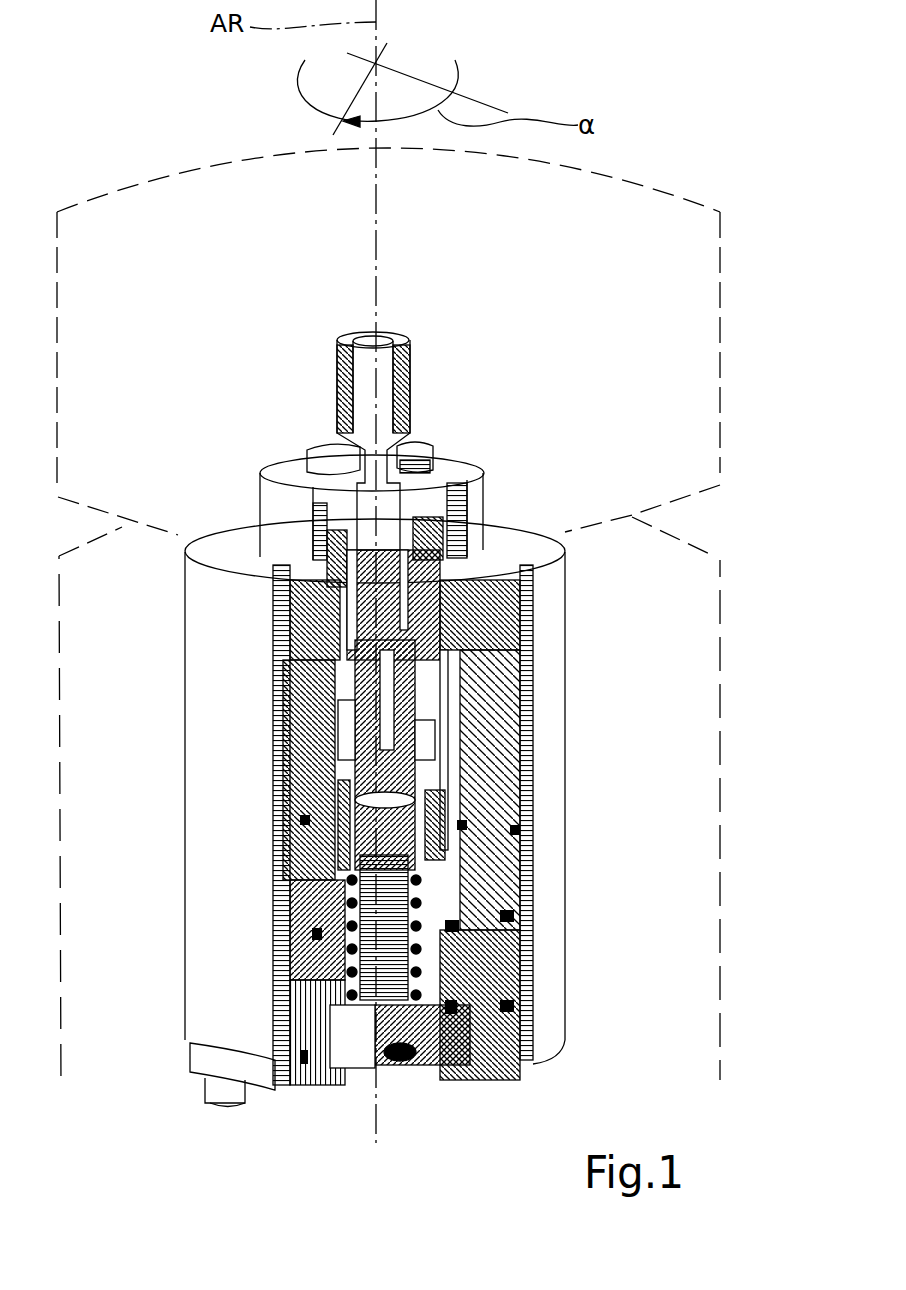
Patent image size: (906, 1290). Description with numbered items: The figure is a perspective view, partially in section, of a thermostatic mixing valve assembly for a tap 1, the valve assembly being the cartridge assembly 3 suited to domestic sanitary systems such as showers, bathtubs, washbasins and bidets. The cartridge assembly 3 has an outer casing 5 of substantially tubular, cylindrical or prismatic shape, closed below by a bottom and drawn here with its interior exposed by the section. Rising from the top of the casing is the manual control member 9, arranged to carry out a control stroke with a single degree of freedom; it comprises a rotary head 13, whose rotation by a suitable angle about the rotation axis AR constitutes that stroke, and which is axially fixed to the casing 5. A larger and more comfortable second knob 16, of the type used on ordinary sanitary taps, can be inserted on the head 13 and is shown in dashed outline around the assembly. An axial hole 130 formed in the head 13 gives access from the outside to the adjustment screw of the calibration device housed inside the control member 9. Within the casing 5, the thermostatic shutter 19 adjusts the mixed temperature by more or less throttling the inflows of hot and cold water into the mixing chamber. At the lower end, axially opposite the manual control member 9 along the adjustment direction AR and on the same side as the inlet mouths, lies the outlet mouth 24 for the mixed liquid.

The tap 1 is at (720, 752).
The thermostatic mixing valve assembly 3 is at (516, 822).
The outer casing 5 is at (205, 820).
The manual control member 9 is at (406, 411).
The rotary head 13 is at (401, 411).
The axial hole 130 is at (367, 350).
The second knob 16 is at (720, 292).
The thermostatic shutter 19 is at (457, 883).
The outlet mouth 24 is at (348, 1044).